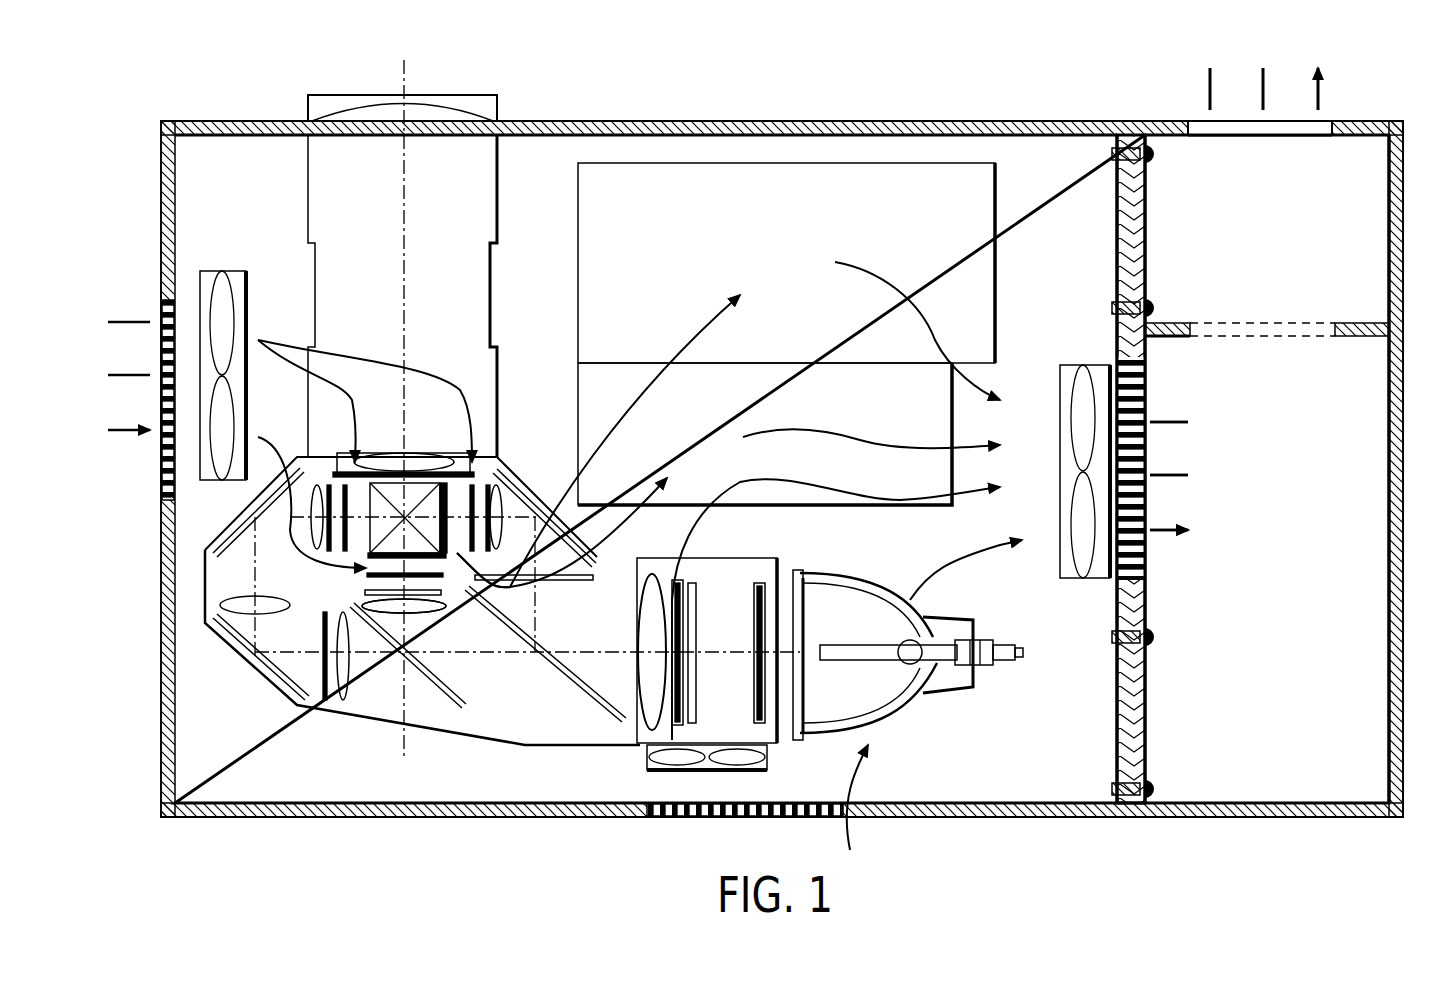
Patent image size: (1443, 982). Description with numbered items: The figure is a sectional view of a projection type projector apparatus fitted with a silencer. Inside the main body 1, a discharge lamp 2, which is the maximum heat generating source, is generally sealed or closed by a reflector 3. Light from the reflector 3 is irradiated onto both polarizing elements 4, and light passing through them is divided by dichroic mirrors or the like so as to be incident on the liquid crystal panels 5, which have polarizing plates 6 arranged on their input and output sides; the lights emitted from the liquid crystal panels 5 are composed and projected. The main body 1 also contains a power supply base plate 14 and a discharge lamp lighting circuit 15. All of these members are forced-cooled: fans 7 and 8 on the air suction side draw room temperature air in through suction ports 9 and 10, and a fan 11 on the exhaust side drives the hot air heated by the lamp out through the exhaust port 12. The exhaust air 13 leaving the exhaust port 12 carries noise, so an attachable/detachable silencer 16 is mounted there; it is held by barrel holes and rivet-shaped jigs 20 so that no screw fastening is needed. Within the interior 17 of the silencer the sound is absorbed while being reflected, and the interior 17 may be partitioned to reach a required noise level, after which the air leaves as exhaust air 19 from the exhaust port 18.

The main body 1 is at (960, 121).
The discharge lamp 2 is at (910, 680).
The reflector 3 is at (850, 600).
The polarizing elements 4 is at (690, 578).
The liquid crystal panels 5 is at (362, 592).
The polarizing plates 6 is at (452, 560).
The fan 7 is at (235, 270).
The fan 8 is at (777, 763).
The suction port 9 is at (160, 296).
The suction port 10 is at (667, 818).
The fan 11 is at (1075, 363).
The exhaust port 12 is at (1148, 580).
The exhaust air 13 is at (1175, 420).
The power supply base plate 14 is at (578, 183).
The discharge lamp lighting circuit 15 is at (578, 398).
The silencer 16 is at (1403, 817).
The interior of the silencer 17 is at (1383, 752).
The exhaust port 18 is at (1337, 120).
The exhaust air 19 is at (1205, 97).
The rivet-shaped jigs 20 is at (1150, 165).